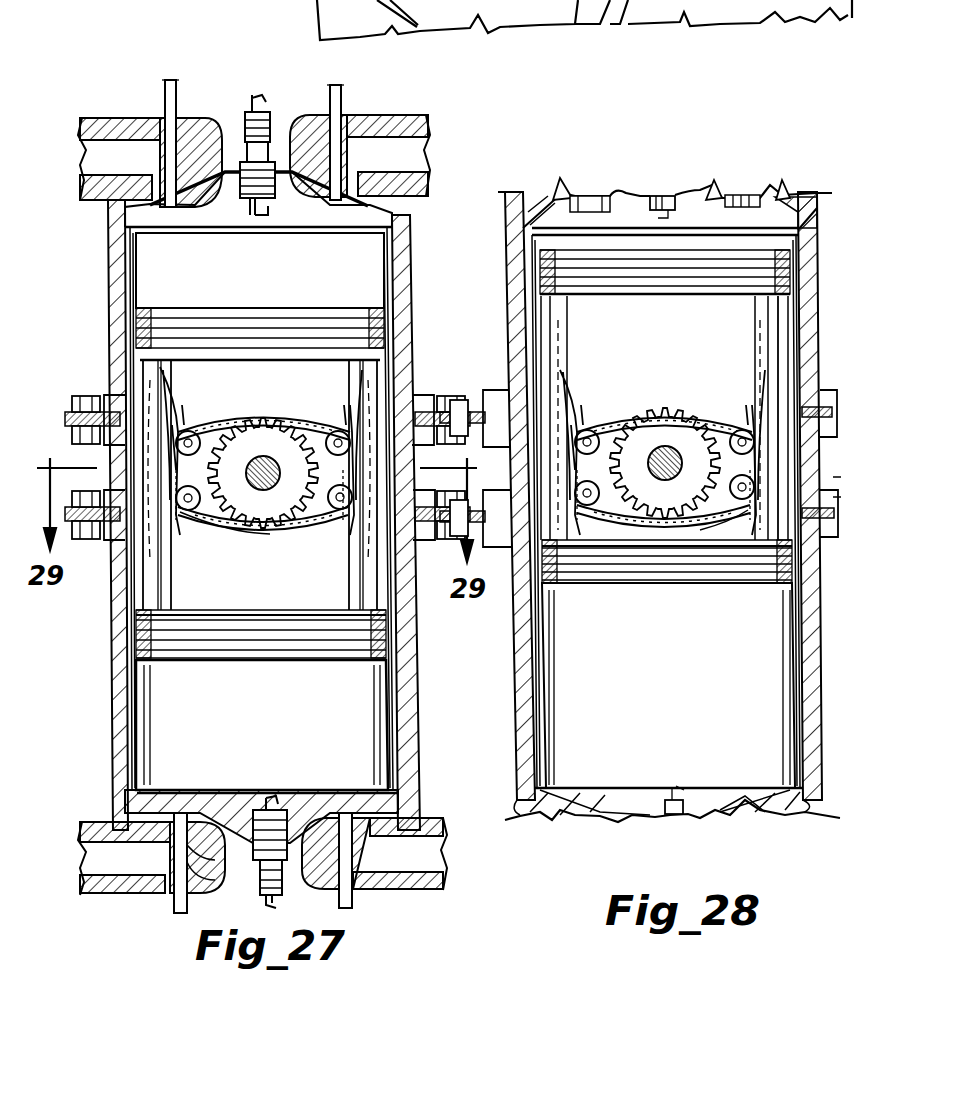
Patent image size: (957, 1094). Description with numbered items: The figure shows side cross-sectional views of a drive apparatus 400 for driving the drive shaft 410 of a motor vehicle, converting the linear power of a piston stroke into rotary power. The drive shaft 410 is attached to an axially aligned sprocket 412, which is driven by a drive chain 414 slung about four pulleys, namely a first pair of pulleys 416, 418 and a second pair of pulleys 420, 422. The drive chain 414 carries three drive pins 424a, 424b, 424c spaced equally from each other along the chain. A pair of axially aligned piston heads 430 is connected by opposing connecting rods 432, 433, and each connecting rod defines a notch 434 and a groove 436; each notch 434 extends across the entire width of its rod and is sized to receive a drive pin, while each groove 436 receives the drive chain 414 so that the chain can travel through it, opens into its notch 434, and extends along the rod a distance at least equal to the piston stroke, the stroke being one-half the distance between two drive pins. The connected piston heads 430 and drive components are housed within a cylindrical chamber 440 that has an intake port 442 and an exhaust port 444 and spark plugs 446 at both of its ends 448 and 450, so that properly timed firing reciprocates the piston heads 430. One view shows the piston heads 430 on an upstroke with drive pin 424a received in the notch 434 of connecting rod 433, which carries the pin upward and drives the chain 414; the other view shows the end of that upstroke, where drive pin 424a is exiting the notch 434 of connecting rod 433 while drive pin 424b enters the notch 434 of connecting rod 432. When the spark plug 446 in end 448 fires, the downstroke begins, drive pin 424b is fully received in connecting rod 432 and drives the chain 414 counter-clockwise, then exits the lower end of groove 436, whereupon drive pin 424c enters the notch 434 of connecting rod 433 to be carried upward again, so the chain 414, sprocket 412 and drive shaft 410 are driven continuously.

In FIG. 27, the drive apparatus 400 is at (100, 115).
In FIG. 27, the drive shaft 410 is at (266, 460).
In FIG. 28, the drive shaft 410 is at (660, 455).
In FIG. 27, the sprocket 412 is at (257, 437).
In FIG. 28, the sprocket 412 is at (640, 530).
In FIG. 27, the drive chain 414 is at (176, 410).
In FIG. 28, the drive chain 414 is at (680, 520).
In FIG. 27, the pulley of first pair 416 is at (178, 432).
In FIG. 28, the pulley of first pair 416 is at (580, 525).
In FIG. 27, the pulley of first pair 418 is at (185, 500).
In FIG. 28, the pulley of first pair 418 is at (587, 495).
In FIG. 27, the pulley of second pair 420 is at (340, 425).
In FIG. 28, the pulley of second pair 420 is at (742, 430).
In FIG. 27, the pulley of second pair 422 is at (275, 540).
In FIG. 28, the pulley of second pair 422 is at (745, 490).
In FIG. 27, the drive pin 424a is at (347, 513).
In FIG. 28, the drive pin 424a is at (760, 420).
In FIG. 27, the drive pin 424b is at (200, 425).
In FIG. 28, the drive pin 424b is at (560, 420).
In FIG. 27, the drive pin 424c is at (185, 630).
In FIG. 28, the drive pin 424c is at (645, 520).
In FIG. 27, the piston heads 430 is at (205, 258).
In FIG. 28, the piston heads 430 is at (707, 263).
In FIG. 27, the connecting rod 432 is at (150, 400).
In FIG. 28, the connecting rod 432 is at (528, 267).
In FIG. 27, the connecting rod 433 is at (398, 308).
In FIG. 28, the connecting rod 433 is at (777, 313).
In FIG. 27, the notch 434 is at (183, 443).
In FIG. 28, the notch 434 is at (562, 425).
In FIG. 27, the groove 436 is at (105, 600).
In FIG. 28, the groove 436 is at (718, 402).
In FIG. 27, the cylindrical chamber 440 is at (147, 760).
In FIG. 28, the cylindrical chamber 440 is at (808, 700).
In FIG. 27, the intake port 442 is at (163, 97).
In FIG. 27, the exhaust port 444 is at (320, 132).
In FIG. 27, the spark plug 446 is at (245, 140).
In FIG. 28, the spark plug 446 is at (657, 195).
In FIG. 27, the chamber end 448 is at (203, 120).
In FIG. 28, the chamber end 448 is at (778, 198).
In FIG. 27, the chamber end 450 is at (190, 880).
In FIG. 28, the chamber end 450 is at (737, 795).